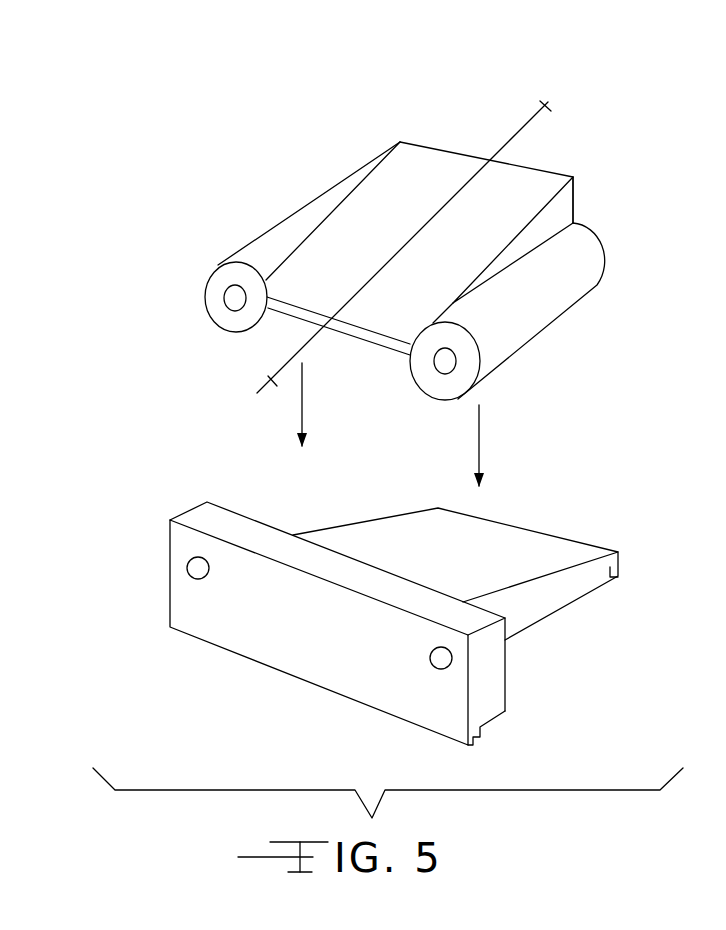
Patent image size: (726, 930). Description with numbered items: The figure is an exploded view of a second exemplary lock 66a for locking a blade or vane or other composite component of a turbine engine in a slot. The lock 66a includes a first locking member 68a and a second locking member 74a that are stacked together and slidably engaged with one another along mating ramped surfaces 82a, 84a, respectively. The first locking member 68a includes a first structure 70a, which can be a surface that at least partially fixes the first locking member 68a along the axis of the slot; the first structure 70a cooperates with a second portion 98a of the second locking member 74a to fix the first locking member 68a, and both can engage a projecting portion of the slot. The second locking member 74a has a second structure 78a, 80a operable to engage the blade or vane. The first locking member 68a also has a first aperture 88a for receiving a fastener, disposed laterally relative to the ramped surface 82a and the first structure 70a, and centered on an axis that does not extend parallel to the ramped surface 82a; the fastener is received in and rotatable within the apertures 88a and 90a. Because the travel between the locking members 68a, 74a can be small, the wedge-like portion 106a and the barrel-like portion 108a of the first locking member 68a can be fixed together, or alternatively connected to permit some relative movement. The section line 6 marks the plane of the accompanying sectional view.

The lock 66a is at (236, 194).
The first structure 70a is at (418, 177).
The barrel-like portion 108a is at (303, 215).
The wedge-like portion 106a is at (572, 195).
The first locking member 68a is at (594, 204).
The first aperture 88a is at (224, 290).
The ramped surface 82a is at (353, 343).
The section line 6- 6 is at (547, 105).
The second locking member 74a is at (318, 703).
The aperture 90a is at (202, 581).
The second structure 78a is at (477, 743).
The second portion 98a is at (477, 620).
The ramped surface 84a is at (513, 571).
The second structure 80a is at (617, 578).